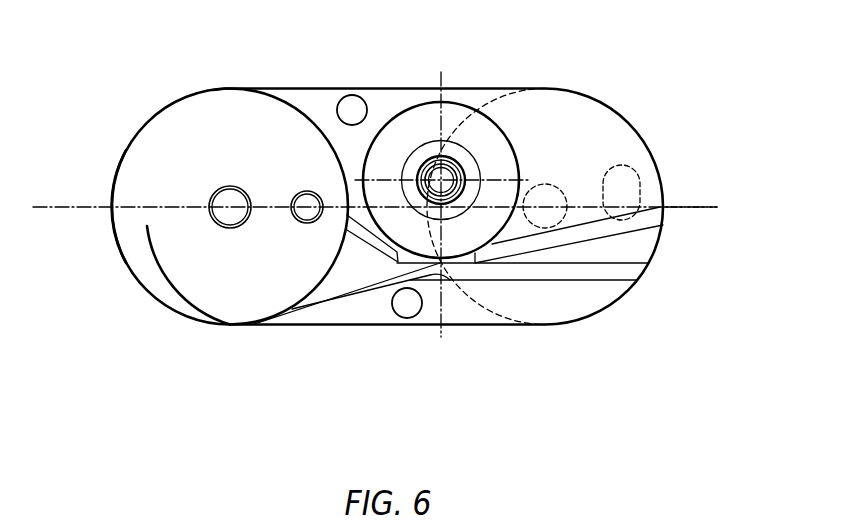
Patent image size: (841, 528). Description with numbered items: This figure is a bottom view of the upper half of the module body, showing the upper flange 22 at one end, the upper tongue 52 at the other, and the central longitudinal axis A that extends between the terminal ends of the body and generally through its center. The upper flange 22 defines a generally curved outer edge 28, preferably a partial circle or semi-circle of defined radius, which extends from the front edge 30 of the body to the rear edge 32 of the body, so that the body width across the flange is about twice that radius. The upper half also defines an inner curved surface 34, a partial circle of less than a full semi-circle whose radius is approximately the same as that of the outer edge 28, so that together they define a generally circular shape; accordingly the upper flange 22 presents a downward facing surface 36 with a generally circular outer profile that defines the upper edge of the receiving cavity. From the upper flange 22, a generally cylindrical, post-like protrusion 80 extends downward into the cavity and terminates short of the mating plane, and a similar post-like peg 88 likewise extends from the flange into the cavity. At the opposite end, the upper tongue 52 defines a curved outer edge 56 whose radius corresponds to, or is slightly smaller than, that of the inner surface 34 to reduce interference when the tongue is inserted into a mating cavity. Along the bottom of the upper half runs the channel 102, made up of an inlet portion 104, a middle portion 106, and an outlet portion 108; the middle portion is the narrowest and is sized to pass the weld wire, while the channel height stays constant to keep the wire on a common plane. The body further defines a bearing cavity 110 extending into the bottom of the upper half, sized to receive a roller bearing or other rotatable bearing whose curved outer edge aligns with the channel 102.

The upper flange 22 is at (183, 125).
The curved outer edge 28 is at (123, 150).
The front edge 30 is at (328, 88).
The rear edge 32 is at (335, 326).
The inner curved surface 34 is at (290, 110).
The downward facing surface 36 is at (147, 226).
The upper tongue 52 is at (602, 102).
The curved outer edge 56 is at (657, 168).
The protrusion 80 is at (220, 227).
The peg 88 is at (307, 223).
The channel 102 is at (470, 272).
The inlet portion 104 is at (358, 263).
The middle portion 106 is at (448, 273).
The outlet portion 108 is at (623, 247).
The bearing cavity 110 is at (420, 106).
The central longitudinal axis A is at (680, 208).